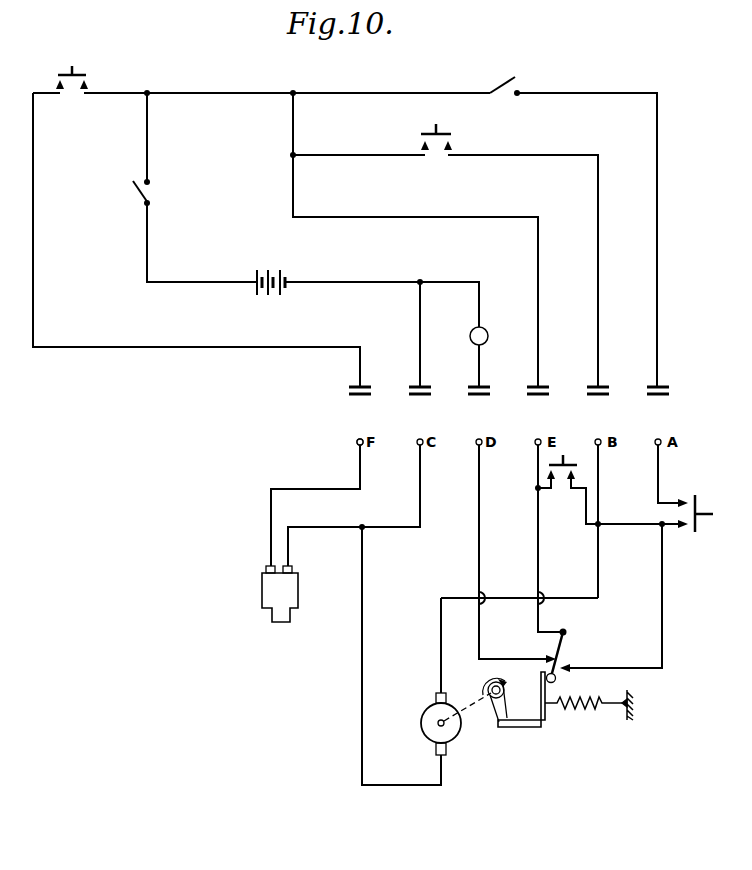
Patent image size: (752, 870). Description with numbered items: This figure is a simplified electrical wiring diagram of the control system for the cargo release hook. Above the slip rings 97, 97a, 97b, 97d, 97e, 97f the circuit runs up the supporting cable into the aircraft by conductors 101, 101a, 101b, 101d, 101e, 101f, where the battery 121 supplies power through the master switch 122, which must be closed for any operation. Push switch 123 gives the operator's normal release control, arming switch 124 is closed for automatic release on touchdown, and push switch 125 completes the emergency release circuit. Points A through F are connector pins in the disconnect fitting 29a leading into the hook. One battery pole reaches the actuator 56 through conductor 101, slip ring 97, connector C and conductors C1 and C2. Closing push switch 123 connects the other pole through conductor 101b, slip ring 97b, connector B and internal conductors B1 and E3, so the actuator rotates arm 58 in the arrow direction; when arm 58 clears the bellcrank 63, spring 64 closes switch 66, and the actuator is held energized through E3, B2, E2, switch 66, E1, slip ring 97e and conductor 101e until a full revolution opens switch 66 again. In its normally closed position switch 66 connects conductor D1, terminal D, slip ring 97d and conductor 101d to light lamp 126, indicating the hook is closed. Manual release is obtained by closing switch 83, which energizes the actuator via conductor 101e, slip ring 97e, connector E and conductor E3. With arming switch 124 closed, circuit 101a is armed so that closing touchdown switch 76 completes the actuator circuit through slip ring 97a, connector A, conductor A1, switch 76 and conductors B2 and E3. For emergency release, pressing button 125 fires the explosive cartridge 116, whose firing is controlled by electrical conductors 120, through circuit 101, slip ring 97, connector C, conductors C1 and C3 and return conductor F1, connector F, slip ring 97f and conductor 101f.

The push switch 125 is at (90, 66).
The arming switch 124 is at (489, 84).
The push switch 123 is at (450, 133).
The master switch 122 is at (152, 187).
The battery 121 is at (277, 268).
The lamp 126 is at (485, 328).
The conductor 101 is at (378, 265).
The conductor 101a is at (659, 366).
The conductor 101b is at (340, 158).
The conductor 101d is at (480, 366).
The conductor 101e is at (292, 131).
The conductor 101f is at (358, 362).
The slip ring 97 is at (444, 387).
The slip ring 97a is at (672, 390).
The slip ring 97b is at (619, 388).
The slip ring 97d is at (499, 388).
The slip ring 97e is at (559, 388).
The slip ring 97f is at (352, 388).
The multiple prong mated connector 29a is at (356, 442).
The return circuit conductor F1 is at (322, 488).
The conductor C1 is at (390, 527).
The conductor C2 is at (360, 645).
The conductor C3 is at (334, 525).
The conductor D1 is at (477, 503).
The conductor E1 is at (536, 516).
The conductor E2 is at (663, 622).
The conductor E3 is at (505, 597).
The internal conductor B1 is at (600, 476).
The conductor B2 is at (627, 523).
The conductor A1 is at (660, 476).
The switch 83 is at (567, 459).
The touchdown switch 76 is at (690, 496).
The electrical conductors 120 is at (287, 553).
The explosive cartridge 116 is at (260, 594).
The actuator 56 is at (420, 720).
The actuator arm 58 is at (505, 701).
The switch 66 is at (566, 653).
The bellcrank 63 is at (514, 727).
The spring 64 is at (583, 710).